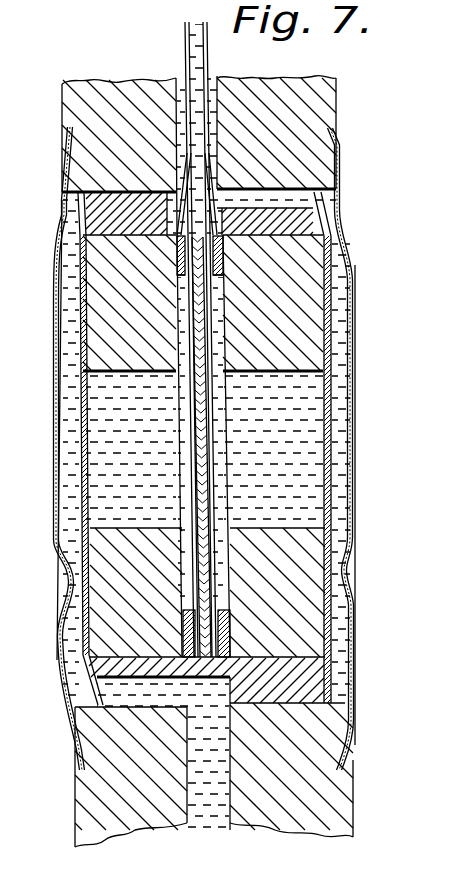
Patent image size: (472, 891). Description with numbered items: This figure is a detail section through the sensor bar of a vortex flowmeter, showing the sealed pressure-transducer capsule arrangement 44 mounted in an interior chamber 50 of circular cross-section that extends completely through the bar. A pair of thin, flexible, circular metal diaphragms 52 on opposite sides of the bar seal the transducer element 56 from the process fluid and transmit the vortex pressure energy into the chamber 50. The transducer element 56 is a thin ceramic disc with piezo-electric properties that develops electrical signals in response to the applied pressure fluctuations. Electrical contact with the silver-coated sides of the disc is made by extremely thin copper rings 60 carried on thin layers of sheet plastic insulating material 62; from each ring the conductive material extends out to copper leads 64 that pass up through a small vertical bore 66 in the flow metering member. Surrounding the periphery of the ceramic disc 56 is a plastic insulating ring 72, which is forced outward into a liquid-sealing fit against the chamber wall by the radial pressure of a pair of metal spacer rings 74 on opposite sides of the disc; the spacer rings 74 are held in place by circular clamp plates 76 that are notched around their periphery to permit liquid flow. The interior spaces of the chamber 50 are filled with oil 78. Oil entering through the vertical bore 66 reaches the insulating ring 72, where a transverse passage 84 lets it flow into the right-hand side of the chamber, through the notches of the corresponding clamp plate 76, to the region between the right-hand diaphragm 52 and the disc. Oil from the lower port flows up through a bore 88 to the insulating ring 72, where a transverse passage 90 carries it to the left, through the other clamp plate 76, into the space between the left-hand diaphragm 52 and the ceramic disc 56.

The pressure-transducer capsule arrangement 44 is at (52, 665).
The interior chamber 50 is at (85, 208).
The diaphragms 52 is at (348, 572).
The transducer element 56 is at (200, 443).
The copper rings 60 is at (221, 252).
The sheet plastic insulating material 62 is at (220, 264).
The copper leads 64 is at (185, 39).
The vertical bore 66 is at (145, 97).
The plastic insulating ring 72 is at (346, 737).
The metal spacer rings 74 is at (293, 345).
The clamp plates 76 is at (326, 607).
The oil 78 is at (306, 492).
The transverse passage 84 is at (284, 189).
The bore 88 is at (210, 803).
The transverse passage 90 is at (138, 700).